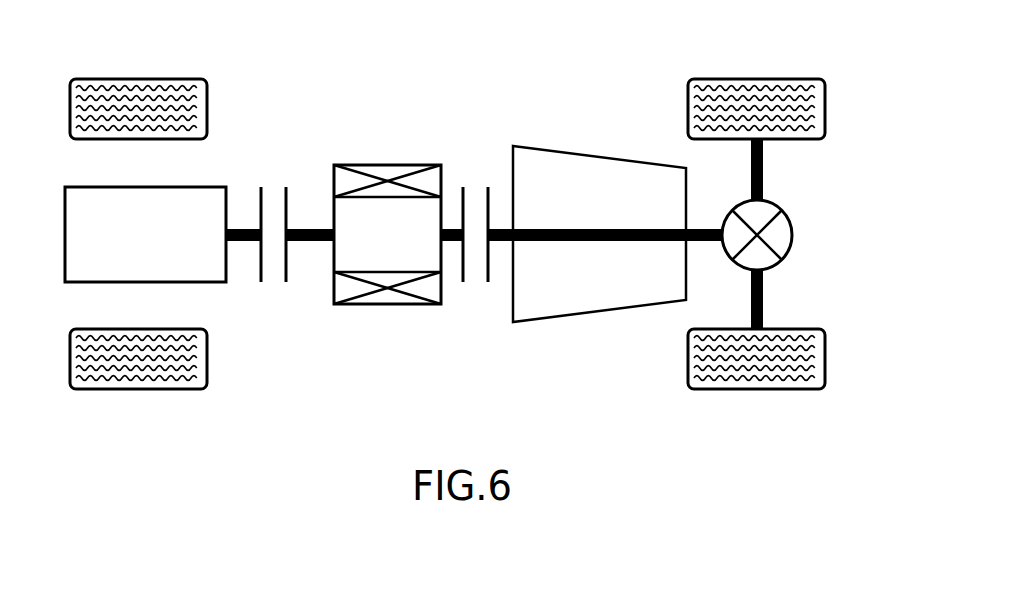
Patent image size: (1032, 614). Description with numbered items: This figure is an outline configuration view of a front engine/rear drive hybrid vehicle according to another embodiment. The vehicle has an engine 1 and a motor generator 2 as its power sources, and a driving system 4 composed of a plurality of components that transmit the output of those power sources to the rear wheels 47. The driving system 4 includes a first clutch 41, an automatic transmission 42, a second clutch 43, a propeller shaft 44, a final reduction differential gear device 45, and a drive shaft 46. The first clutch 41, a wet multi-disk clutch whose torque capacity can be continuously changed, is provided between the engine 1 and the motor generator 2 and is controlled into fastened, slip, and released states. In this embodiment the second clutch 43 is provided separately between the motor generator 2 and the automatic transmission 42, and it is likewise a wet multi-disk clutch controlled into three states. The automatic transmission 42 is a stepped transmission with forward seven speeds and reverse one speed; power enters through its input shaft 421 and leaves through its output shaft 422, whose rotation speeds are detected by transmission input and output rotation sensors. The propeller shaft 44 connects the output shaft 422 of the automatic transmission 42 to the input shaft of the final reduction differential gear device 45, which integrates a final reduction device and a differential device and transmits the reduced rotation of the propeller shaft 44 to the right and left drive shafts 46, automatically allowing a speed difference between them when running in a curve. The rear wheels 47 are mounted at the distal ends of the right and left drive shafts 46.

The engine 1 is at (207, 188).
The motor generator 2 is at (365, 305).
The driving system 4 is at (648, 55).
The first clutch 41 is at (286, 197).
The automatic transmission 42 is at (513, 160).
The input shaft 421 is at (500, 242).
The output shaft 422 is at (686, 243).
The second clutch 43 is at (462, 190).
The propeller shaft 44 is at (700, 228).
The final reduction differential gear device 45 is at (739, 204).
The drive shaft 46 is at (751, 160).
The rear wheel 47 is at (826, 105).